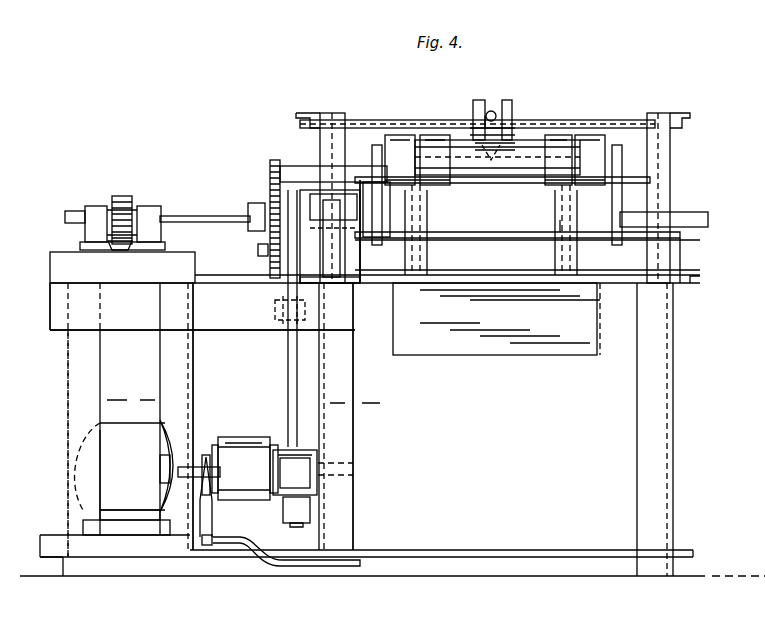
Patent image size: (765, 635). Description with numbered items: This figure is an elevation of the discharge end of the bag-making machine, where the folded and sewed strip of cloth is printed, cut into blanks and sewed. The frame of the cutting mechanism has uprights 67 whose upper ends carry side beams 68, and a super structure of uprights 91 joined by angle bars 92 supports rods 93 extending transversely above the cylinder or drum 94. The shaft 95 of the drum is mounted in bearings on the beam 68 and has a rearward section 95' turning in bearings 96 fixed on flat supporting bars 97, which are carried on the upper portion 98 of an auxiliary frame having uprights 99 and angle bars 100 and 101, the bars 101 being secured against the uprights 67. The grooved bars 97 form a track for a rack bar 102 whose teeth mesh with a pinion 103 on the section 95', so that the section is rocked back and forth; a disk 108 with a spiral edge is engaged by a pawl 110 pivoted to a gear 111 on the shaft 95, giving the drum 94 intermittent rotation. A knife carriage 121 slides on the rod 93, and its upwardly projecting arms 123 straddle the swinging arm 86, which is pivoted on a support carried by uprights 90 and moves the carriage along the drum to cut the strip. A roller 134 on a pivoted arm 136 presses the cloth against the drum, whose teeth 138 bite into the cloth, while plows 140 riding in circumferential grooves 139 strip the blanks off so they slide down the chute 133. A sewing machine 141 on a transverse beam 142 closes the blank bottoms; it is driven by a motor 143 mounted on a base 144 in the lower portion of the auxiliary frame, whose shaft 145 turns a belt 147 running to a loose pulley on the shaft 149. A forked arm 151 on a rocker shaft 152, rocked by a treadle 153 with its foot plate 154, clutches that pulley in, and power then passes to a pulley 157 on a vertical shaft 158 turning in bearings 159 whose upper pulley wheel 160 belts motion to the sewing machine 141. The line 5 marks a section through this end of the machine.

The section line 5 is at (60, 399).
The upright 67 is at (637, 380).
The side beam 68 is at (690, 283).
The arm 86 is at (493, 110).
The upright 90 is at (190, 350).
The upright 91 is at (337, 118).
The angle bar 92 is at (308, 113).
The rod 93 is at (383, 121).
The drum 94 is at (540, 140).
The shaft 95 is at (666, 203).
The shaft section 95' is at (212, 206).
The bearing 96 is at (95, 210).
The supporting bar 97 is at (80, 244).
The upper portion of auxiliary frame 98 is at (60, 272).
The upright 99 is at (75, 354).
The angle bar 100 is at (62, 313).
The angle bar 101 is at (146, 320).
The rack bar 102 is at (122, 250).
The pinion 103 is at (122, 198).
The disk 108 is at (268, 195).
The pawl 110 is at (262, 250).
The gear 111 is at (276, 162).
The carriage 121 is at (515, 130).
The arm 123 is at (476, 104).
The chute 133 is at (480, 347).
The roller 134 is at (405, 140).
The arm 136 is at (377, 145).
The tooth 138 is at (560, 222).
The groove 139 is at (420, 195).
The plow 140 is at (427, 222).
The sewing machine 141 is at (358, 283).
The beam 142 is at (628, 268).
The motor 143 is at (165, 428).
The base plate 144 is at (140, 548).
The motor shaft 145 is at (162, 486).
The belt 147 is at (248, 445).
The shaft 149 is at (355, 470).
The arm 151 is at (312, 452).
The rocker shaft 152 is at (207, 545).
The treadle 153 is at (260, 552).
The foot plate 154 is at (312, 516).
The pulley 157 is at (212, 519).
The shaft 158 is at (288, 366).
The bearing 159 is at (275, 310).
The pulley wheel 160 is at (290, 182).